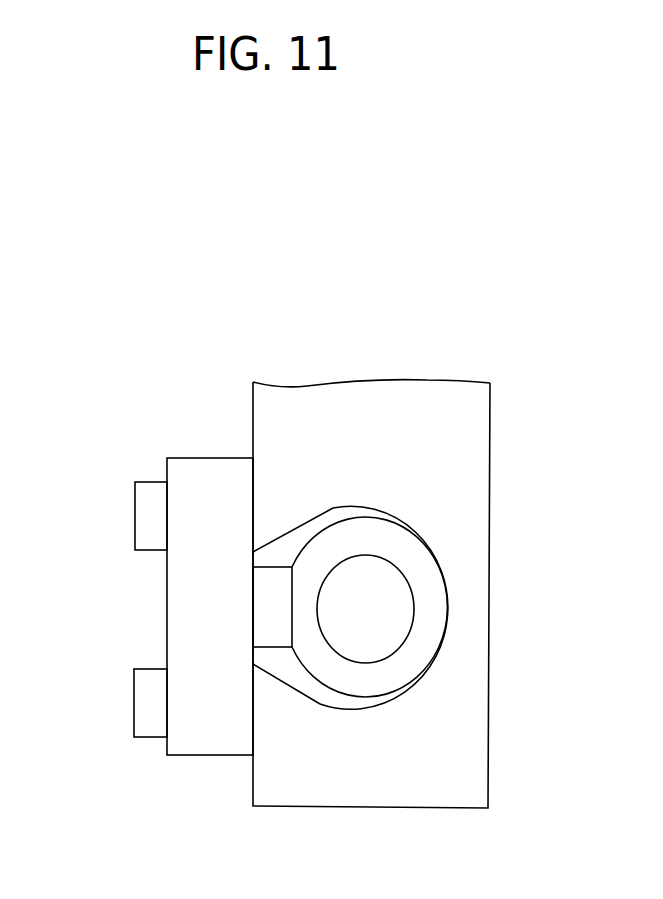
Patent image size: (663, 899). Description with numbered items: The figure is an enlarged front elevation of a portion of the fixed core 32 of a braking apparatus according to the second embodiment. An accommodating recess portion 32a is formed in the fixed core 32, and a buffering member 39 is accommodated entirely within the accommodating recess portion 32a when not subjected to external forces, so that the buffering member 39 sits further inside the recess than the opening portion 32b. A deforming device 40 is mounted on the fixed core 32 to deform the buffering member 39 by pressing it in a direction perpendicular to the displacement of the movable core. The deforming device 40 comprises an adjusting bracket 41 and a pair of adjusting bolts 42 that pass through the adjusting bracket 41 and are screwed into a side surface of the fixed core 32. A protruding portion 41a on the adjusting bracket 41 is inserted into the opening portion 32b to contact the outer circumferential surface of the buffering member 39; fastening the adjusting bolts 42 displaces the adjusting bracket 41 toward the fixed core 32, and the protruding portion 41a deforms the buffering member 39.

The fixed core 32 is at (422, 807).
The accommodating recess portion 32a is at (303, 517).
The opening portion 32b is at (252, 665).
The buffering member 39 is at (330, 687).
The deforming device 40 is at (172, 660).
The adjusting bracket 41 is at (182, 757).
The protruding portion 41a is at (273, 648).
The adjusting bolts 42 is at (135, 532).